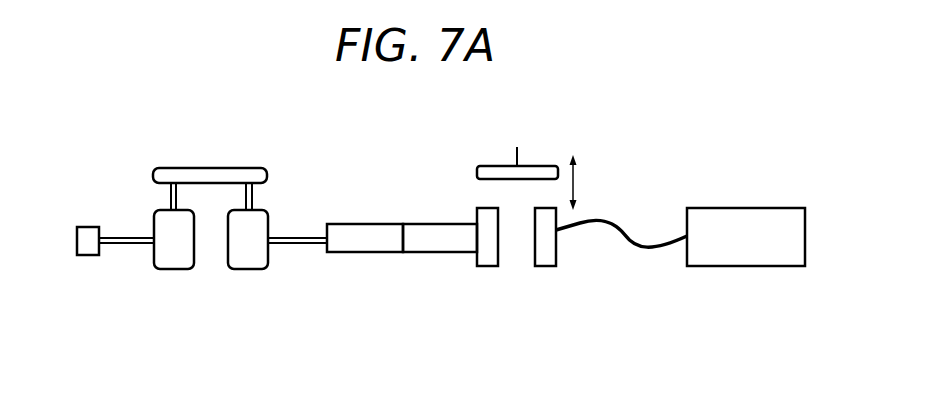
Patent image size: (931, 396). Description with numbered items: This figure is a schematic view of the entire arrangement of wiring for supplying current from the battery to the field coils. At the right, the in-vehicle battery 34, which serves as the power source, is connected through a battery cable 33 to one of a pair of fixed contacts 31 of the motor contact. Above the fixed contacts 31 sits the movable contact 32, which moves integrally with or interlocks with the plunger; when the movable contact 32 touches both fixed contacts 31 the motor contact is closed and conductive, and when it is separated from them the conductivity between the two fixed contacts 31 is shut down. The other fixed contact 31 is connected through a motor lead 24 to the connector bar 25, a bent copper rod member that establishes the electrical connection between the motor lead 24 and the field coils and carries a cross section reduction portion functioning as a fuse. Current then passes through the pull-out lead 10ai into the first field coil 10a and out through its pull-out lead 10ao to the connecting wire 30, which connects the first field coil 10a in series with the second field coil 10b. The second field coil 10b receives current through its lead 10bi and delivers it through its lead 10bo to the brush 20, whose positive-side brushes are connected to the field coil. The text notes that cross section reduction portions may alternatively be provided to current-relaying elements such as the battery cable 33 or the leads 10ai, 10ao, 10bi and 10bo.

The brush 20 is at (82, 258).
The lead of the field coil 10b 10bo is at (122, 245).
The second field coil 10b is at (172, 270).
The lead of the field coil 10b 10bi is at (170, 197).
The connecting wire 30 is at (237, 167).
The pull-out lead of the field coil 10a 10ao is at (254, 195).
The first field coil 10a is at (236, 270).
The pull-out lead of the field coil 10a 10ai is at (290, 245).
The connector bar 25 is at (360, 254).
The motor lead 24 is at (423, 254).
The fixed contacts 31 is at (557, 252).
The movable contact 32 is at (541, 166).
The battery cable 33 is at (654, 243).
The battery 34 is at (773, 207).